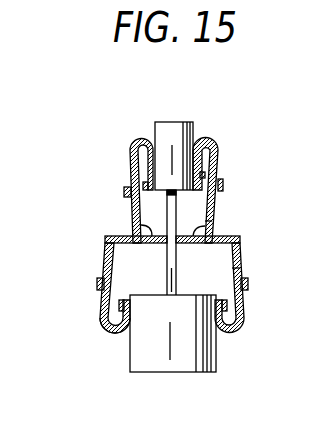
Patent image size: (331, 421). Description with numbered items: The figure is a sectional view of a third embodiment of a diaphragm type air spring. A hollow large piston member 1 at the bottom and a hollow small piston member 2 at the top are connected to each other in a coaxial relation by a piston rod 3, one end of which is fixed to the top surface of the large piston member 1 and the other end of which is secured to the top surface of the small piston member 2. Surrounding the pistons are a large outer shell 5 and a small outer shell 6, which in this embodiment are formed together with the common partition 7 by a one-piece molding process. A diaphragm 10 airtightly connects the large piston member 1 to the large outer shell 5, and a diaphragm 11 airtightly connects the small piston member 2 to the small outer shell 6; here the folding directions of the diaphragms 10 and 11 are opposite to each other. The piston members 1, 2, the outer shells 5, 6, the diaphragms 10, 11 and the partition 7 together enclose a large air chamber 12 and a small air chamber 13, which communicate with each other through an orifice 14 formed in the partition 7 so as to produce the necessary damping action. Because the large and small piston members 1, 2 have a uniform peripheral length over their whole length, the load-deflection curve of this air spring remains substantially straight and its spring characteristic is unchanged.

The large piston member 1 is at (128, 358).
The small piston member 2 is at (193, 136).
The piston rod 3 is at (200, 261).
The large outer shell 5 is at (105, 259).
The small outer shell 6 is at (128, 210).
The partition 7 is at (131, 223).
The diaphragm 10 is at (103, 326).
The diaphragm 11 is at (140, 147).
The large air chamber 12 is at (212, 286).
The small air chamber 13 is at (208, 210).
The orifice 14 is at (205, 221).